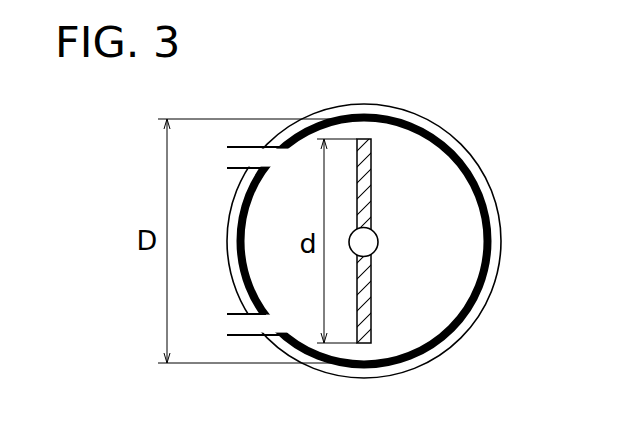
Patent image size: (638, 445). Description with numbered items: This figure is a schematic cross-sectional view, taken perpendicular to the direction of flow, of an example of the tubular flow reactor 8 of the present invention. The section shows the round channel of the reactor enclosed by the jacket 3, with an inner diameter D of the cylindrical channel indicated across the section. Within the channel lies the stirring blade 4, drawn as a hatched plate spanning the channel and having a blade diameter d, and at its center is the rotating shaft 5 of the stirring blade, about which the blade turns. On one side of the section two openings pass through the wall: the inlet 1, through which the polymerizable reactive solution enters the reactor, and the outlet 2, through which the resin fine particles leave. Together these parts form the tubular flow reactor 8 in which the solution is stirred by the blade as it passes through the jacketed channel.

The inlet 1 is at (227, 323).
The outlet 2 is at (187, 158).
The jacket 3 is at (500, 240).
The stirring blade 4 is at (366, 152).
The rotating shaft 5 is at (372, 241).
The tubular flow reactor 8 is at (367, 200).